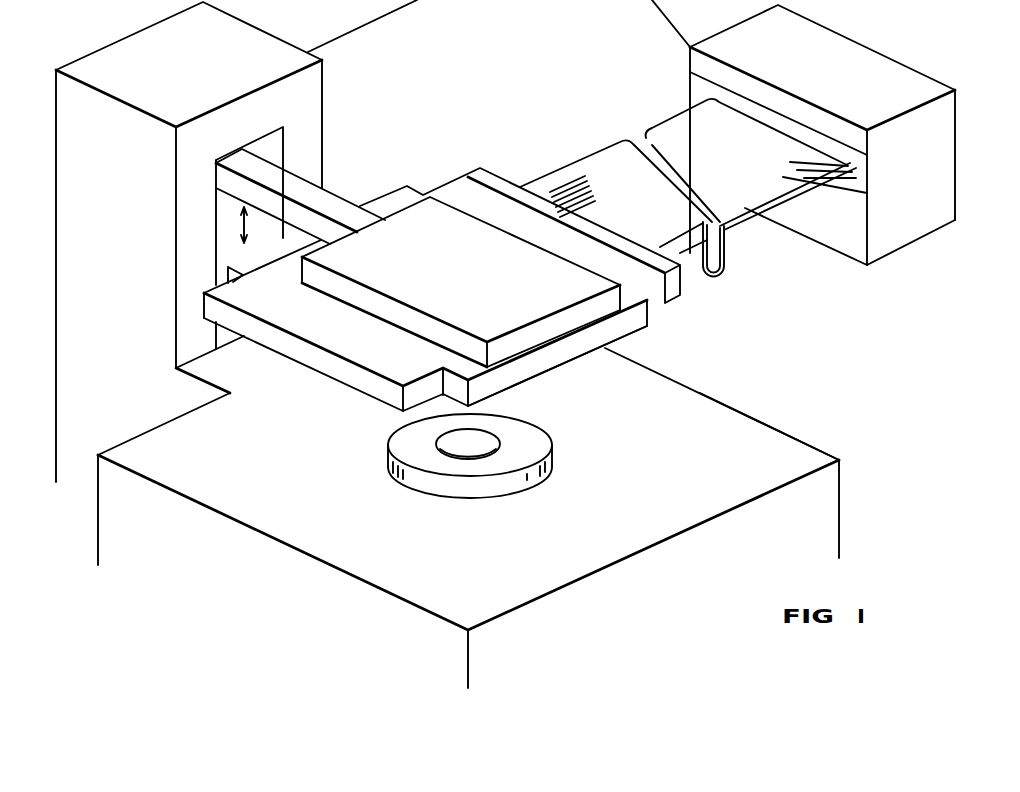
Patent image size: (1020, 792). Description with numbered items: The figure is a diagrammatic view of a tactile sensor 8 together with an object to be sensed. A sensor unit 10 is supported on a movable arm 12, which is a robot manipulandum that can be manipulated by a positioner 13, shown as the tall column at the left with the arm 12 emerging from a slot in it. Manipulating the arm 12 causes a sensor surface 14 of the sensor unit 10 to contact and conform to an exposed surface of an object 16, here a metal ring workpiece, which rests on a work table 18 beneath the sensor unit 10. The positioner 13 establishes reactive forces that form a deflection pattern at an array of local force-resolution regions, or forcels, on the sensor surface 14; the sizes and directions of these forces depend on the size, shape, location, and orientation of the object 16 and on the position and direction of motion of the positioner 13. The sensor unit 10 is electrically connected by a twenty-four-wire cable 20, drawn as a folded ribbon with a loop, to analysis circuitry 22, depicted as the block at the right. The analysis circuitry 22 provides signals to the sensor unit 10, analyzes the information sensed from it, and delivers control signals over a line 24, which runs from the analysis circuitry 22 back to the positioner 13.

The tactile sensor 8 is at (823, 373).
The sensor unit 10 is at (660, 325).
The movable arm 12 is at (534, 301).
The positioner 13 is at (200, 72).
The sensor surface 14 is at (546, 388).
The object 16 is at (556, 462).
The work table 18 is at (842, 475).
The cable 20 is at (588, 152).
The analysis circuitry 22 is at (910, 235).
The line 24 is at (360, 25).